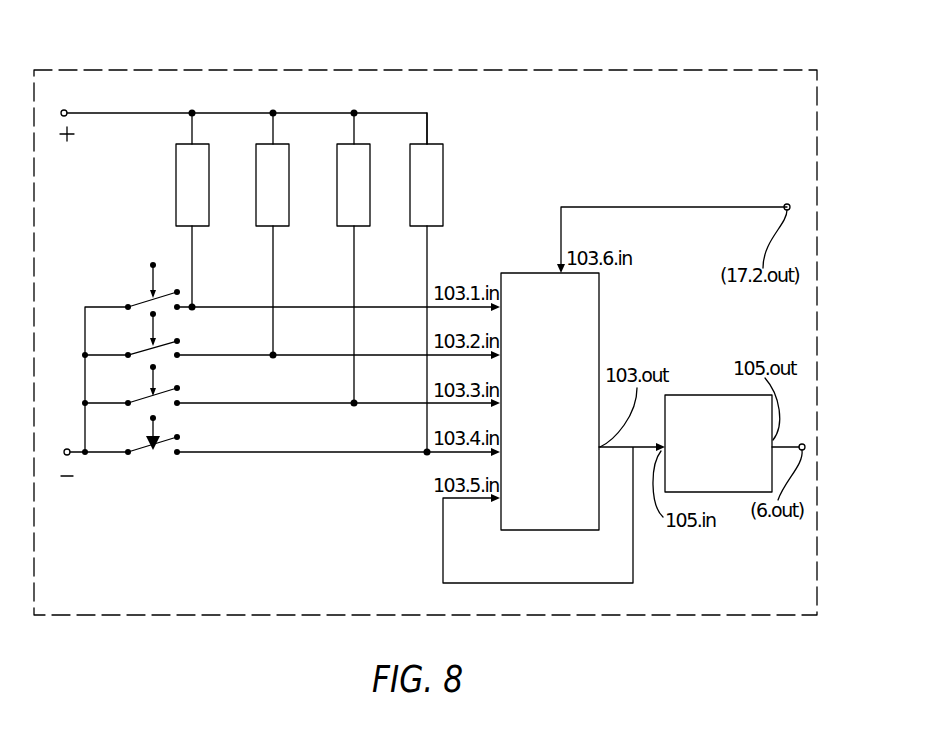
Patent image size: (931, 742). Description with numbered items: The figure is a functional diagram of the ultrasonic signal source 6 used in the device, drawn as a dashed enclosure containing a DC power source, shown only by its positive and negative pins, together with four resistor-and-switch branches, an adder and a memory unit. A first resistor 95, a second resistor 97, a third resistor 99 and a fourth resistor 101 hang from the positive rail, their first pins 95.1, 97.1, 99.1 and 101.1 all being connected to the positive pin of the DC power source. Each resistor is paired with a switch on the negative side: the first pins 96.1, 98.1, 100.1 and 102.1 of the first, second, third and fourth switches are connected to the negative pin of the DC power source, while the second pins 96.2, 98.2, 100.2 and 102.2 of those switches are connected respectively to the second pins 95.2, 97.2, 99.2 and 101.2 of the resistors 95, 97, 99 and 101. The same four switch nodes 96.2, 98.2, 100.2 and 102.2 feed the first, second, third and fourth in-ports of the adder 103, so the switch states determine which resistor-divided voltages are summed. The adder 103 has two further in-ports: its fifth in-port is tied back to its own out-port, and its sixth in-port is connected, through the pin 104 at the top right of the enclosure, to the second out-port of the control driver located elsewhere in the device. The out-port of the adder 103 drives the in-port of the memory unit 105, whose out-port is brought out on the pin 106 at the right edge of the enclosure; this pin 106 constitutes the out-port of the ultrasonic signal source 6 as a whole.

The ultrasonic signal source 6 is at (767, 70).
The first resistor 95 is at (192, 210).
The second resistor 97 is at (272, 234).
The third resistor 99 is at (353, 258).
The fourth resistor 101 is at (426, 298).
The first pin of first resistor 95.1 is at (175, 127).
The first pin of second resistor 97.1 is at (255, 127).
The first pin of third resistor 99.1 is at (338, 127).
The first pin of fourth resistor 101.1 is at (403, 128).
The second pin of first resistor 95.2 is at (193, 304).
The second pin of second resistor 97.2 is at (274, 353).
The second pin of third resistor 99.2 is at (356, 401).
The second pin of fourth resistor 101.2 is at (427, 450).
The first pin of first switch 96.1 is at (128, 304).
The first pin of second switch 98.1 is at (128, 353).
The first pin of third switch 100.1 is at (128, 401).
The first pin of fourth switch 102.1 is at (128, 450).
The second pin of first switch 96.2 is at (178, 310).
The second pin of second switch 98.2 is at (178, 358).
The second pin of third switch 100.2 is at (178, 406).
The second pin of fourth switch 102.2 is at (178, 455).
The adder 103 is at (550, 401).
The pin 104 is at (787, 204).
The memory unit 105 is at (718, 443).
The pin 106 is at (802, 444).